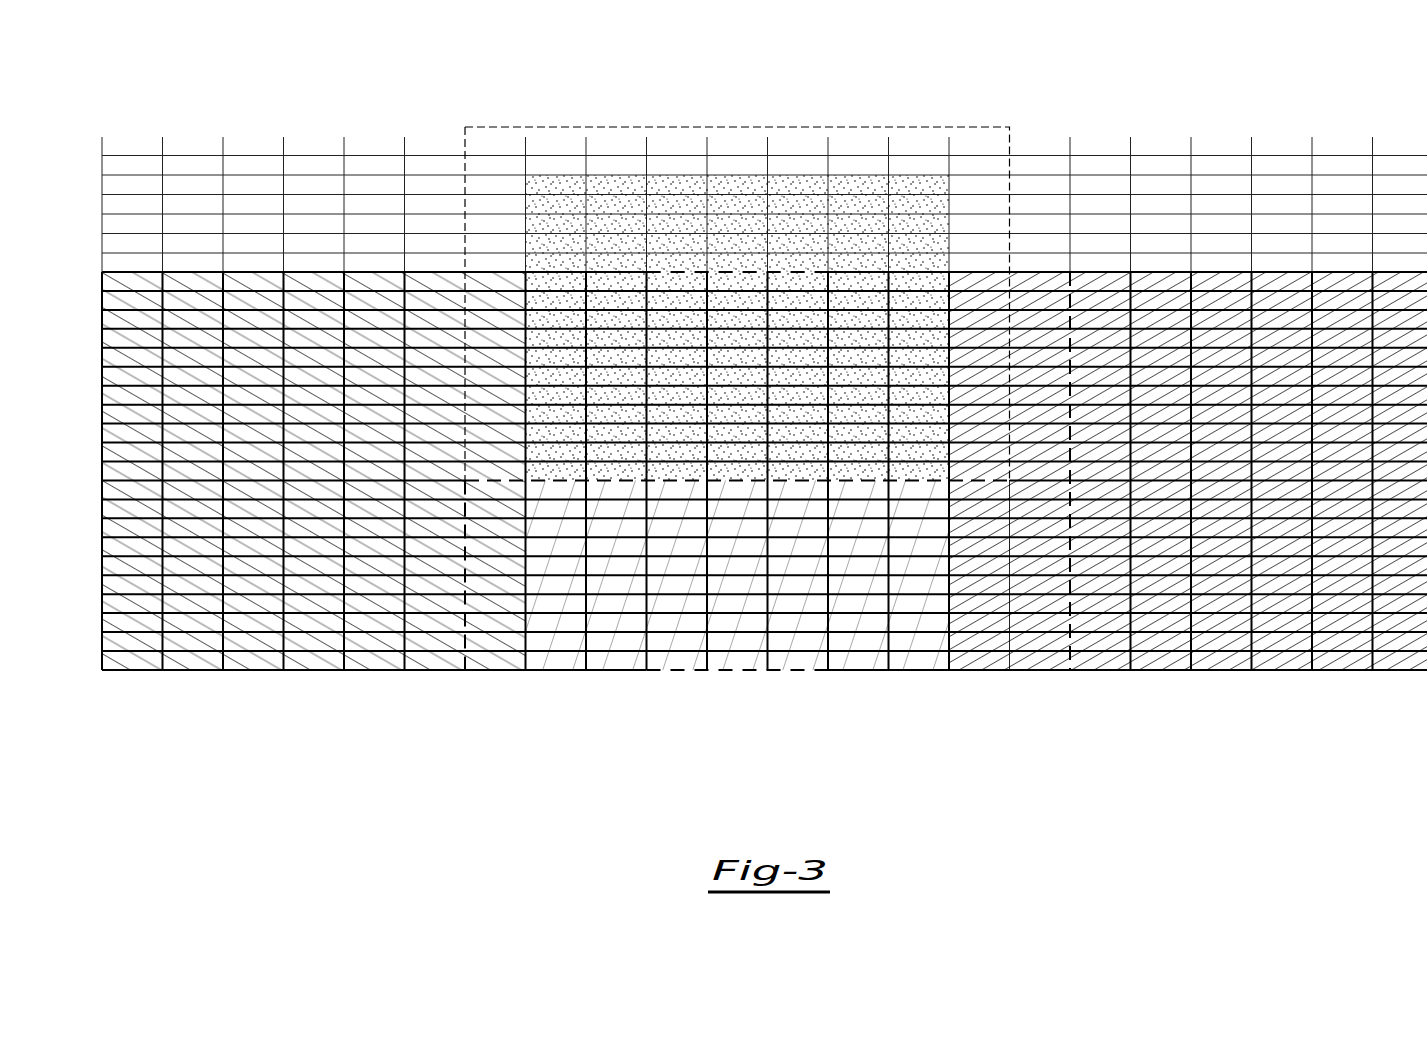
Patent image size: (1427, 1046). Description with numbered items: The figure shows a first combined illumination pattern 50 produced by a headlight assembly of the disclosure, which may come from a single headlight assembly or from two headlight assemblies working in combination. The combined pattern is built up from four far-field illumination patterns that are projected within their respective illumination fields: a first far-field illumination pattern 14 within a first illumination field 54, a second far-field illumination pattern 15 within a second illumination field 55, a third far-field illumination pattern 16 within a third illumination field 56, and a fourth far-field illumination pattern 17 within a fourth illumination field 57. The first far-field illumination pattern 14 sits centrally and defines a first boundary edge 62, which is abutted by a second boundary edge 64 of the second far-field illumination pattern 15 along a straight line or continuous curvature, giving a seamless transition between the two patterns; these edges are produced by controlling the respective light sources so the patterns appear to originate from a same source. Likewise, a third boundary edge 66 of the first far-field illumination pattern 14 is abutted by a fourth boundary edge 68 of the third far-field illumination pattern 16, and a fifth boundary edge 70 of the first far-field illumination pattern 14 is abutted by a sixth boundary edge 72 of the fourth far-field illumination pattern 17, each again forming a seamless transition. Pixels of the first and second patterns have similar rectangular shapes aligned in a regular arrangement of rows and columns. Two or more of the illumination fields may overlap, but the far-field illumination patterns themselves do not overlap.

The first combined illumination pattern 50 is at (298, 76).
The first far-field illumination pattern 14 is at (678, 623).
The second far-field illumination pattern 15 is at (329, 298).
The third far-field illumination pattern 16 is at (1223, 300).
The fourth far-field illumination pattern 17 is at (621, 207).
The first illumination field 54 is at (748, 672).
The second illumination field 55 is at (238, 272).
The third illumination field 56 is at (1154, 272).
The fourth illumination field 57 is at (850, 127).
The first boundary edge 62 is at (512, 507).
The second boundary edge 64 is at (512, 507).
The third boundary edge 66 is at (950, 522).
The fourth boundary edge 68 is at (950, 540).
The fifth boundary edge 70 is at (678, 478).
The sixth boundary edge 72 is at (735, 481).